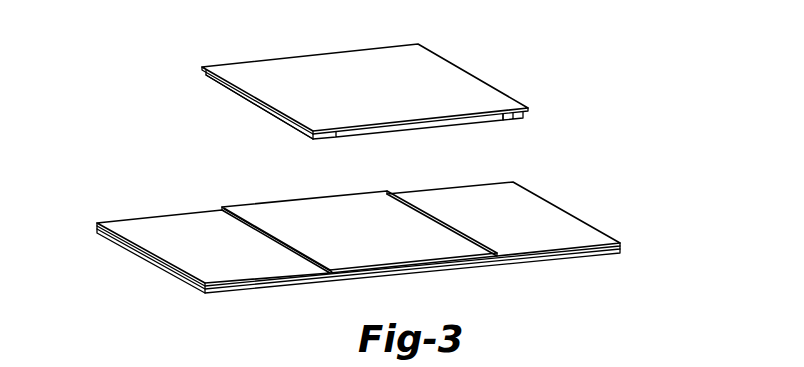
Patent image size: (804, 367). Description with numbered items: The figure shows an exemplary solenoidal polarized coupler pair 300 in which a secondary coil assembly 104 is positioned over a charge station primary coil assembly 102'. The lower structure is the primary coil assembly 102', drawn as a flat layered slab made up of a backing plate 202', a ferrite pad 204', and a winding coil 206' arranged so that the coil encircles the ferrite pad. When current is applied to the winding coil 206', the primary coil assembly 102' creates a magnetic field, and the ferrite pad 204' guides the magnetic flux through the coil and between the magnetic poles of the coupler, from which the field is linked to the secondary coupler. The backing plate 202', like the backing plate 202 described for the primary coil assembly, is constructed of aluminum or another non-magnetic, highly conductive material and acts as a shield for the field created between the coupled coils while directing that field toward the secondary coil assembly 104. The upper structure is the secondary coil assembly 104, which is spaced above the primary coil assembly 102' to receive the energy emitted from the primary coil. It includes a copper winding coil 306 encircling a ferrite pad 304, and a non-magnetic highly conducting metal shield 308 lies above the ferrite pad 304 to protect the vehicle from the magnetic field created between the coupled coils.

The solenoidal polarized coupler pair 300 is at (140, 58).
The secondary coil assembly 104 is at (275, 52).
The non-magnetic highly conducting metal shield 308 is at (400, 60).
The copper winding coil 306 is at (372, 130).
The ferrite pad 304 is at (518, 113).
The primary coil assembly 102' is at (384, 238).
The backing plate 202' is at (209, 252).
The winding coil 206' is at (353, 217).
The ferrite pad 204' is at (503, 215).
The backing plate 202 is at (745, 9).